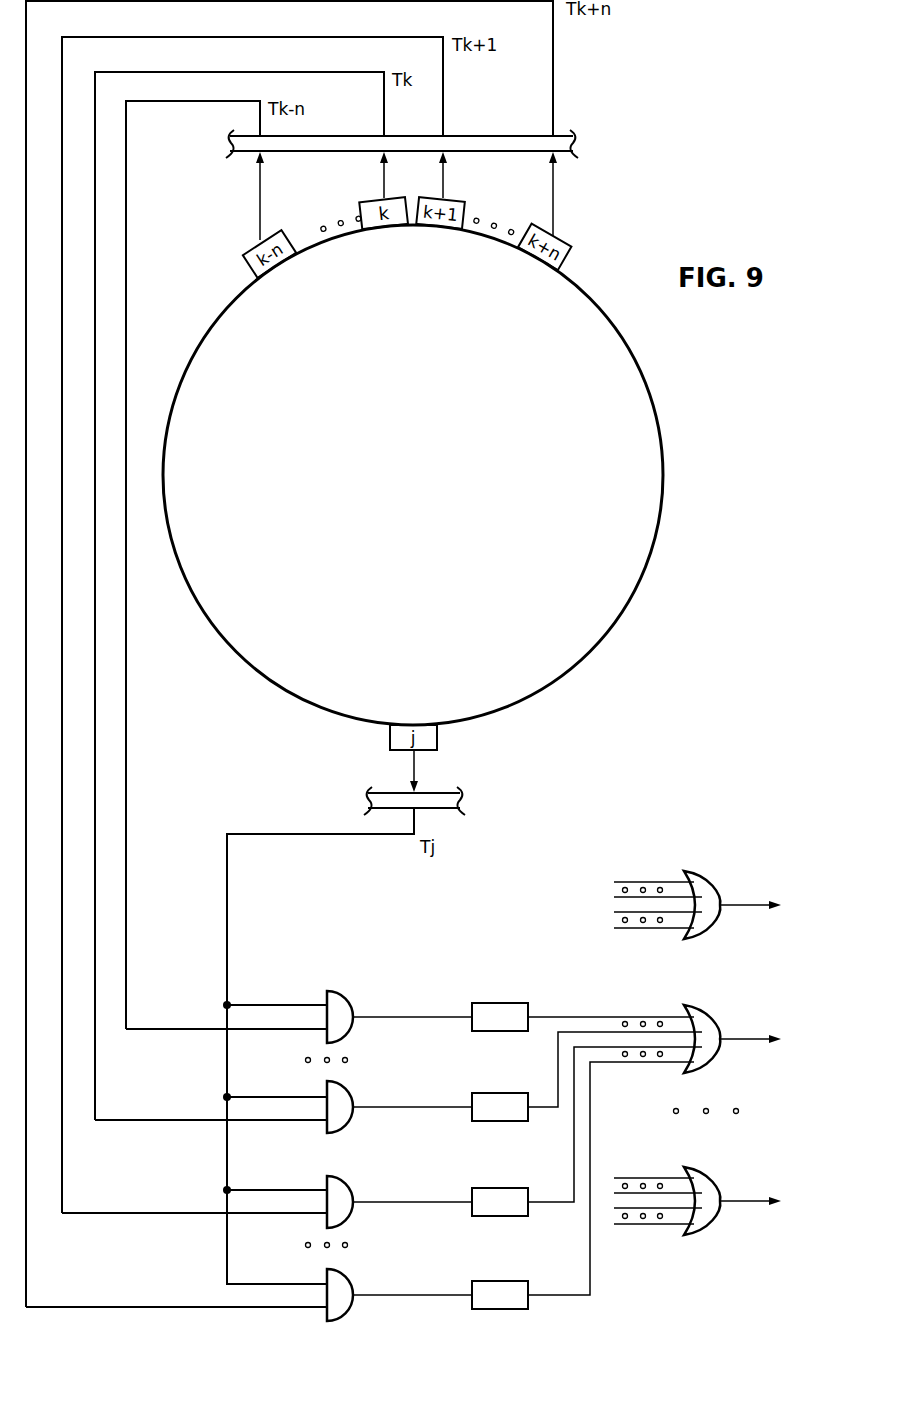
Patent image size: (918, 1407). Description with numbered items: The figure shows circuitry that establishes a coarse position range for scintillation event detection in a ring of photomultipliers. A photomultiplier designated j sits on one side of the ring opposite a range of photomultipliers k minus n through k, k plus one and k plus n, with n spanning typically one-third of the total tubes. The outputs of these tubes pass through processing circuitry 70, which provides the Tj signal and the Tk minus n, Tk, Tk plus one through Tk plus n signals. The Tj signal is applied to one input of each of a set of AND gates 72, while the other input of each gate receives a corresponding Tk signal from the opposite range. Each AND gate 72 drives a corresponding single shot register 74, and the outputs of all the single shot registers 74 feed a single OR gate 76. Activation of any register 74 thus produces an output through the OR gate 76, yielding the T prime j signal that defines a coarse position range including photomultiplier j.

The processing circuitry 70 is at (573, 133).
The AND gates 72 is at (336, 1006).
The single shot registers 74 is at (493, 1003).
The OR gate 76 is at (703, 930).